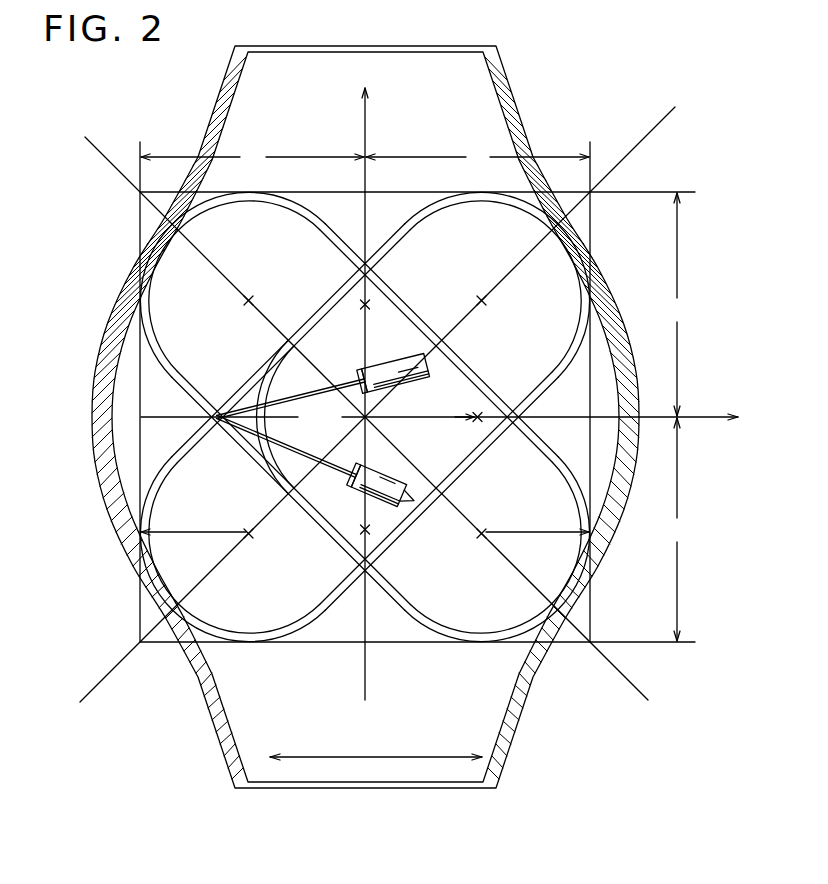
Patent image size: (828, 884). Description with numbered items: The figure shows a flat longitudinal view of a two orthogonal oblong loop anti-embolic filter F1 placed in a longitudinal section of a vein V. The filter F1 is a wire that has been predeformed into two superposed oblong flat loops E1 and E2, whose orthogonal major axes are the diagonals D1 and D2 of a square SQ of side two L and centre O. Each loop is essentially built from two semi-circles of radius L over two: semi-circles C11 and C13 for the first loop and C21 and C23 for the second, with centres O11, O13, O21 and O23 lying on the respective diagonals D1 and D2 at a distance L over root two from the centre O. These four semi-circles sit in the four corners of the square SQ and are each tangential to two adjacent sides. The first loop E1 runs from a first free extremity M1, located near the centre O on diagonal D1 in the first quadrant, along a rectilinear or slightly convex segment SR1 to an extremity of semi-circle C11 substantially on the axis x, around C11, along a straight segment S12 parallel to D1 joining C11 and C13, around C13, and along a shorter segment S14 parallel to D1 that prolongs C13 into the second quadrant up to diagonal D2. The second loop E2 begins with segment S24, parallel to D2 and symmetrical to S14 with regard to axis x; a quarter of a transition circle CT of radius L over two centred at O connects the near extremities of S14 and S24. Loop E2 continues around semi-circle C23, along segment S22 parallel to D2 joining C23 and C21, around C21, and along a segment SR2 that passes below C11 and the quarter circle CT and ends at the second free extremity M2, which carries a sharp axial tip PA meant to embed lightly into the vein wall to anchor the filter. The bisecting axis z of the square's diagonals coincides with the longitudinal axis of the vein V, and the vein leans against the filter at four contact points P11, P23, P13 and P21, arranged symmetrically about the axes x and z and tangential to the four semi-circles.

The vein V is at (207, 723).
The square SQ is at (413, 644).
The axis Oz z is at (357, 394).
The axis Ox x is at (448, 412).
The centre O is at (377, 429).
The major axis (diagonal) D1 is at (112, 671).
The major axis (diagonal) D2 is at (615, 669).
The semi-circle C21 is at (228, 201).
The semi-circle C13 is at (471, 200).
The semi-circle C11 is at (264, 640).
The semi-circle C23 is at (480, 641).
The straight line segment S14 is at (320, 314).
The straight line segment S22 is at (482, 383).
The straight line segment S12 is at (410, 520).
The straight line segment S24 is at (318, 518).
The transition circle CT is at (260, 450).
The centre of semi-circle O21 is at (246, 303).
The centre of semi-circle O13 is at (482, 301).
The centre of semi-circle O11 is at (250, 534).
The centre of semi-circle O23 is at (492, 525).
The sharp axial tip PA is at (367, 529).
The rectilinear or substantially convex segment SR1 is at (346, 387).
The straight line or substantially convex segment SR2 is at (328, 464).
The first free extremity (weight) M1 is at (414, 362).
The second free extremity (weight) M2 is at (386, 481).
The contact point P21 is at (149, 263).
The contact point P13 is at (588, 250).
The contact point P11 is at (144, 594).
The contact point P23 is at (592, 589).
The first oblong loop E1 is at (280, 665).
The second oblong loop E2 is at (594, 439).
The filter F1 is at (571, 108).
The half side length L is at (417, 392).